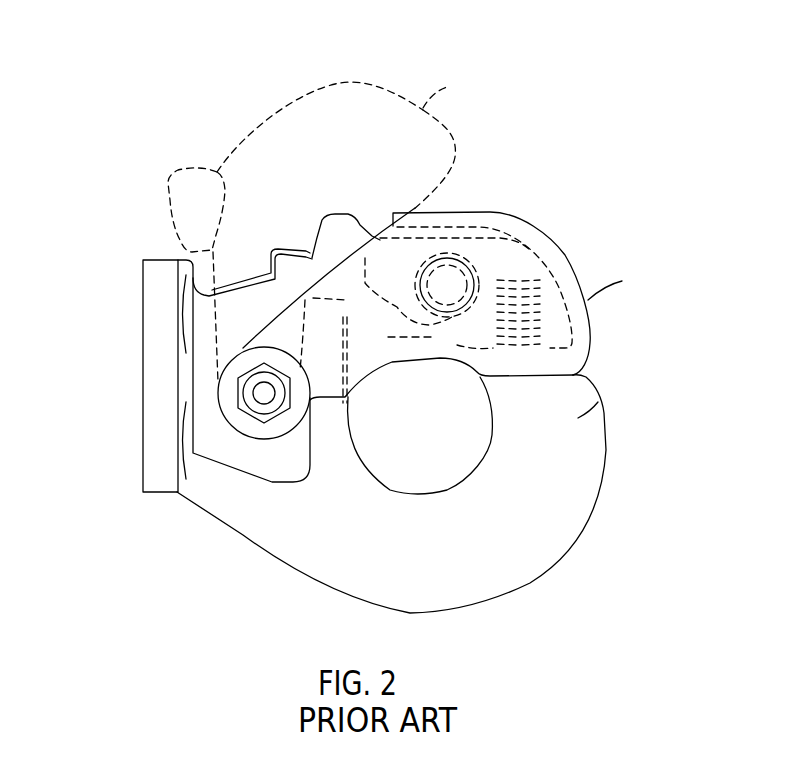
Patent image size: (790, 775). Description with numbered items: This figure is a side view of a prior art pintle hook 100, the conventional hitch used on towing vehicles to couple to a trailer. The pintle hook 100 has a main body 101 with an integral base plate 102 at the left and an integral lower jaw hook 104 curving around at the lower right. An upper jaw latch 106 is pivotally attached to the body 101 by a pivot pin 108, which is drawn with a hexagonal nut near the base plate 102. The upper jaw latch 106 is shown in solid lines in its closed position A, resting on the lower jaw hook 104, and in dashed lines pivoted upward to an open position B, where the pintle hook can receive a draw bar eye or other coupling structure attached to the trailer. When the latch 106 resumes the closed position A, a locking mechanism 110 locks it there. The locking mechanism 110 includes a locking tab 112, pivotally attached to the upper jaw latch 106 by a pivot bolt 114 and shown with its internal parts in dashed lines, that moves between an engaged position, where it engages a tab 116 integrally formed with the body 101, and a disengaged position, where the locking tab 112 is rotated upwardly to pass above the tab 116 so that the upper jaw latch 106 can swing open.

The pintle hook 100 is at (505, 143).
The main body 101 is at (235, 541).
The base plate 102 is at (143, 338).
The lower jaw hook 104 is at (573, 543).
The upper jaw latch 106 is at (538, 230).
The pivot pin 108 is at (255, 386).
The locking mechanism 110 is at (158, 195).
The locking tab 112 is at (191, 163).
The pivot bolt 114 is at (463, 263).
The tab 116 is at (275, 248).